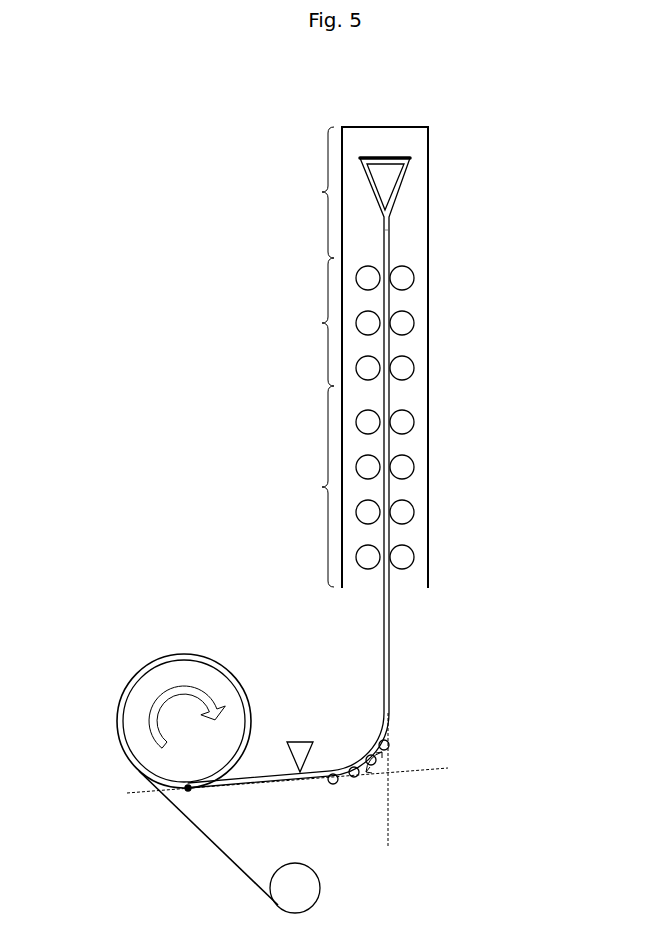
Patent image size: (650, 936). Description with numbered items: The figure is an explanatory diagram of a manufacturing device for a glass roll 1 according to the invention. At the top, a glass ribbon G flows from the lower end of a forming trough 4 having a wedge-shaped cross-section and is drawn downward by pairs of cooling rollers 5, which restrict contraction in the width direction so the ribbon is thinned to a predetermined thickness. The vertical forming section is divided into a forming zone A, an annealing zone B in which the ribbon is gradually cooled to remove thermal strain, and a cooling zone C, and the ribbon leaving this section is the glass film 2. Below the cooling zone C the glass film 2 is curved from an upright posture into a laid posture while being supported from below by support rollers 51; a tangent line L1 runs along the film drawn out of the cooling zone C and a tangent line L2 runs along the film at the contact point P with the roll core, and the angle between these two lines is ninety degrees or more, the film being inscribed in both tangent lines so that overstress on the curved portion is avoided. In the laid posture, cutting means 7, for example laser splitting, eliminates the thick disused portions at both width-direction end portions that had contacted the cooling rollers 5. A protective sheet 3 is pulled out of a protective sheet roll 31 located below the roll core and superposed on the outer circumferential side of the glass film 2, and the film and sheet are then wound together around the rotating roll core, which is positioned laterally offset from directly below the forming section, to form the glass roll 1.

The glass roll 1 is at (138, 697).
The glass film 2 is at (391, 650).
The protective sheet 3 is at (200, 843).
The protective sheet roll 31 is at (312, 888).
The forming trough 4 is at (387, 178).
The cooling rollers 5 is at (405, 283).
The support rollers 51 is at (354, 777).
The cutting means 7 is at (300, 742).
The glass ribbon G is at (392, 237).
The forming zone A is at (316, 192).
The annealing zone B is at (316, 322).
The cooling zone C is at (316, 486).
The contact point P is at (190, 791).
The tangent line L1 is at (391, 820).
The tangent line L2 is at (448, 770).